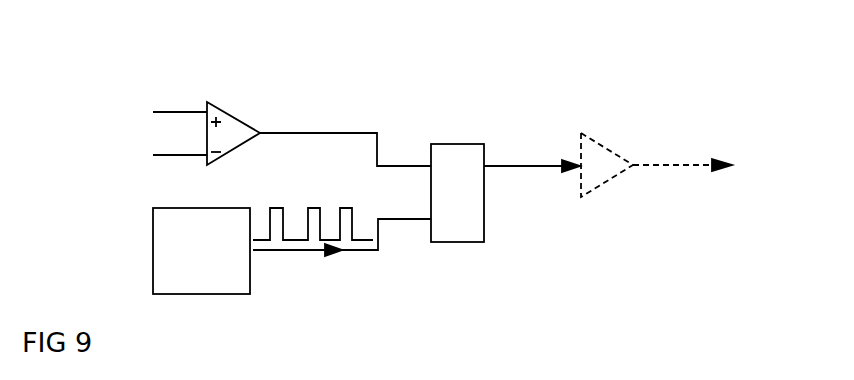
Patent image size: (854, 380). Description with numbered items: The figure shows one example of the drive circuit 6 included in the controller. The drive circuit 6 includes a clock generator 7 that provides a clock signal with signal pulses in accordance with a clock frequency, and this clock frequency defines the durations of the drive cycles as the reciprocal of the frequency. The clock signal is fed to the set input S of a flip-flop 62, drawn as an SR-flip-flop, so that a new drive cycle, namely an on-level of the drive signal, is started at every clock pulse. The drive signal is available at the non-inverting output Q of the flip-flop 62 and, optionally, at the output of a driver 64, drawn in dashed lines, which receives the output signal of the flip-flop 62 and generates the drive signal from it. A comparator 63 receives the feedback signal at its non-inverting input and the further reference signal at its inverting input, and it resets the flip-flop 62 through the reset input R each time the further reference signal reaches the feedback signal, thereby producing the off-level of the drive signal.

The drive circuit 6 is at (327, 64).
The comparator 63 is at (228, 107).
The clock generator 7 is at (215, 208).
The flip-flop 62 is at (455, 144).
The driver 64 is at (603, 145).